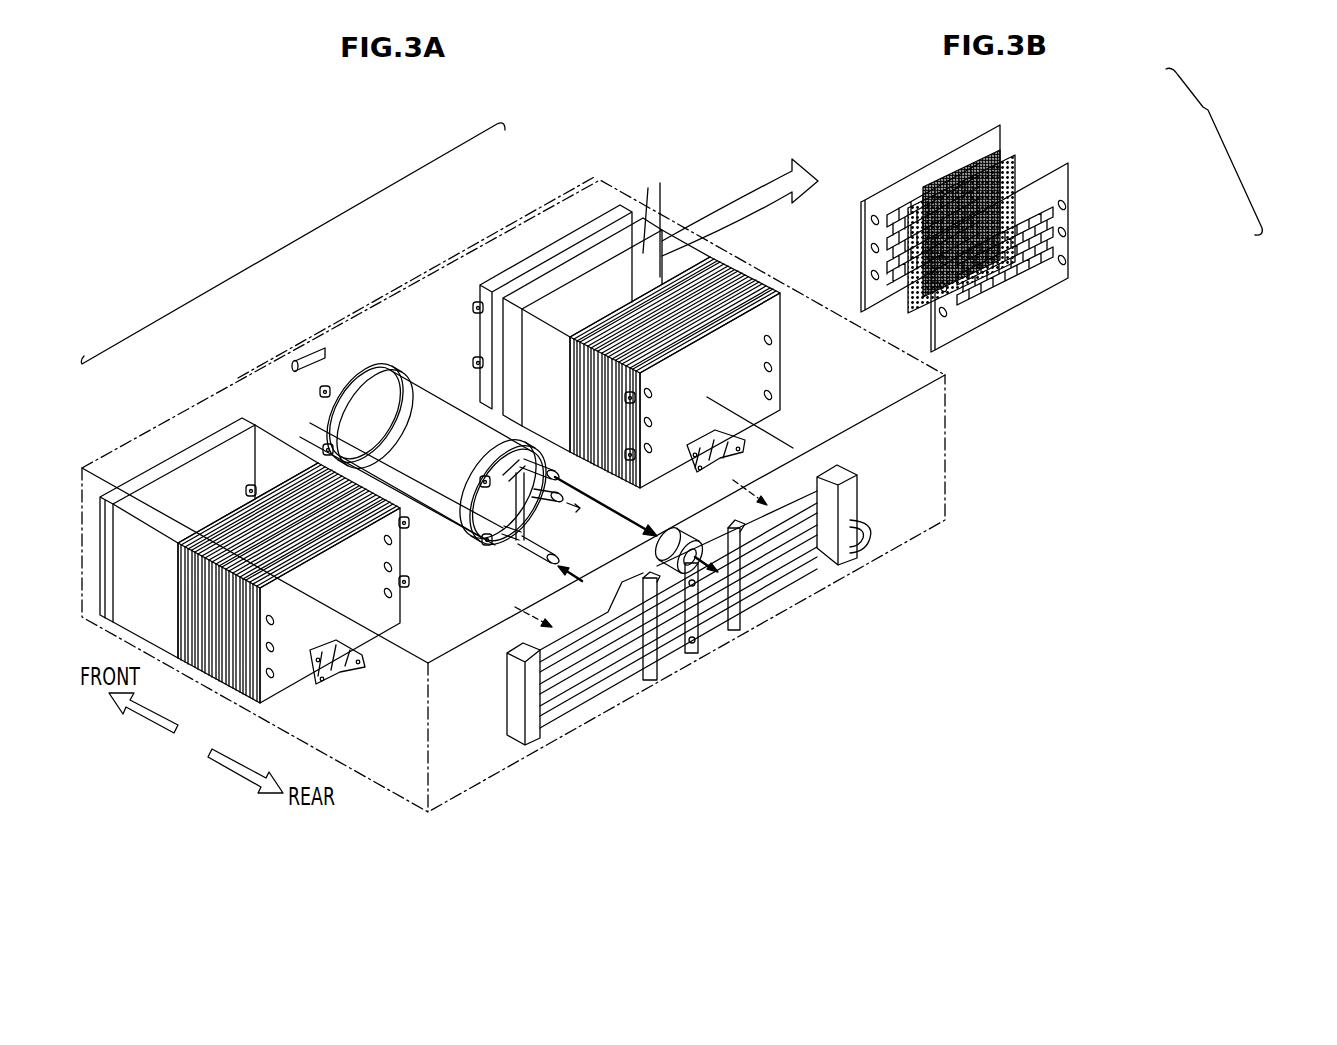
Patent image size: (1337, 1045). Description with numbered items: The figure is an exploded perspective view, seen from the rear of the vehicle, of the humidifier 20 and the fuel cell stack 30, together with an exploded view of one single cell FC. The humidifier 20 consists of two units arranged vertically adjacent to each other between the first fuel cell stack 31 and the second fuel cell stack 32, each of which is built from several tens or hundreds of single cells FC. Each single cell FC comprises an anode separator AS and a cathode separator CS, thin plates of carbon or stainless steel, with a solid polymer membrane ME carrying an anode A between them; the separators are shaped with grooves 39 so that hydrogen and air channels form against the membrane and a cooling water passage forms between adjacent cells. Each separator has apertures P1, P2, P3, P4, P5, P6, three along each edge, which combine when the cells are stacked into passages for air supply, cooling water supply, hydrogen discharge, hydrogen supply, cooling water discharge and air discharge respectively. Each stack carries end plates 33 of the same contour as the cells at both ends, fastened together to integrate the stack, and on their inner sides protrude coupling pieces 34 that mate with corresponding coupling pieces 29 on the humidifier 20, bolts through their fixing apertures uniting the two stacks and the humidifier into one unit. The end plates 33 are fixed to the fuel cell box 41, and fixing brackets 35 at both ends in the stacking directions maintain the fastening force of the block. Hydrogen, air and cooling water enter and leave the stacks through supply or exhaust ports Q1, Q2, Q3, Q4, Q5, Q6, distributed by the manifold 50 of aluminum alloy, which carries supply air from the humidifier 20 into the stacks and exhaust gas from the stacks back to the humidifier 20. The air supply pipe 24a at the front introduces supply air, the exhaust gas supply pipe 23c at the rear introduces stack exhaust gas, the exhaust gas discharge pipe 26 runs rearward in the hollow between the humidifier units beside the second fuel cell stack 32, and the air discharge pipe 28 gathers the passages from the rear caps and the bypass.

In FIG. 3A, the humidifier 20 is at (462, 436).
In FIG. 3A, the exhaust gas supply pipe 23c is at (538, 557).
In FIG. 3A, the air supply pipe 24a is at (300, 362).
In FIG. 3A, the exhaust gas discharge pipe 26 is at (413, 457).
In FIG. 3A, the air discharge pipe 28 is at (547, 492).
In FIG. 3A, the coupling pieces 29 is at (397, 357).
In FIG. 3A, the fuel cell stack 30 is at (300, 237).
In FIG. 3A, the first fuel cell stack 31 is at (500, 262).
In FIG. 3A, the second fuel cell stack 32 is at (184, 442).
In FIG. 3A, the end plates 33 is at (170, 462).
In FIG. 3A, the coupling pieces 34 is at (253, 497).
In FIG. 3A, the fixing brackets 35 is at (338, 676).
In FIG. 3B, the grooves 39 is at (990, 293).
In FIG. 3A, the fuel cell box 41 is at (812, 598).
In FIG. 3A, the manifold 50 is at (697, 664).
In FIG. 3A, the single cell FC is at (712, 206).
In FIG. 3B, the single cell FC is at (1238, 151).
In FIG. 3B, the cathode separator CS is at (957, 158).
In FIG. 3B, the solid polymer membrane ME is at (1007, 163).
In FIG. 3B, the anode A is at (1018, 182).
In FIG. 3B, the anode separator AS is at (1063, 186).
In FIG. 3B, the apertures P1 is at (872, 220).
In FIG. 3B, the apertures P2 is at (872, 248).
In FIG. 3B, the apertures P3 is at (872, 275).
In FIG. 3B, the apertures P4 is at (1067, 205).
In FIG. 3B, the apertures P5 is at (1067, 232).
In FIG. 3B, the apertures P6 is at (1067, 260).
In FIG. 3A, the supply port or exhaust port Q1 is at (652, 392).
In FIG. 3A, the supply port or exhaust port Q2 is at (652, 420).
In FIG. 3A, the supply port or exhaust port Q3 is at (652, 446).
In FIG. 3A, the supply port or exhaust port Q4 is at (772, 341).
In FIG. 3A, the supply port or exhaust port Q5 is at (772, 368).
In FIG. 3A, the supply port or exhaust port Q6 is at (772, 396).